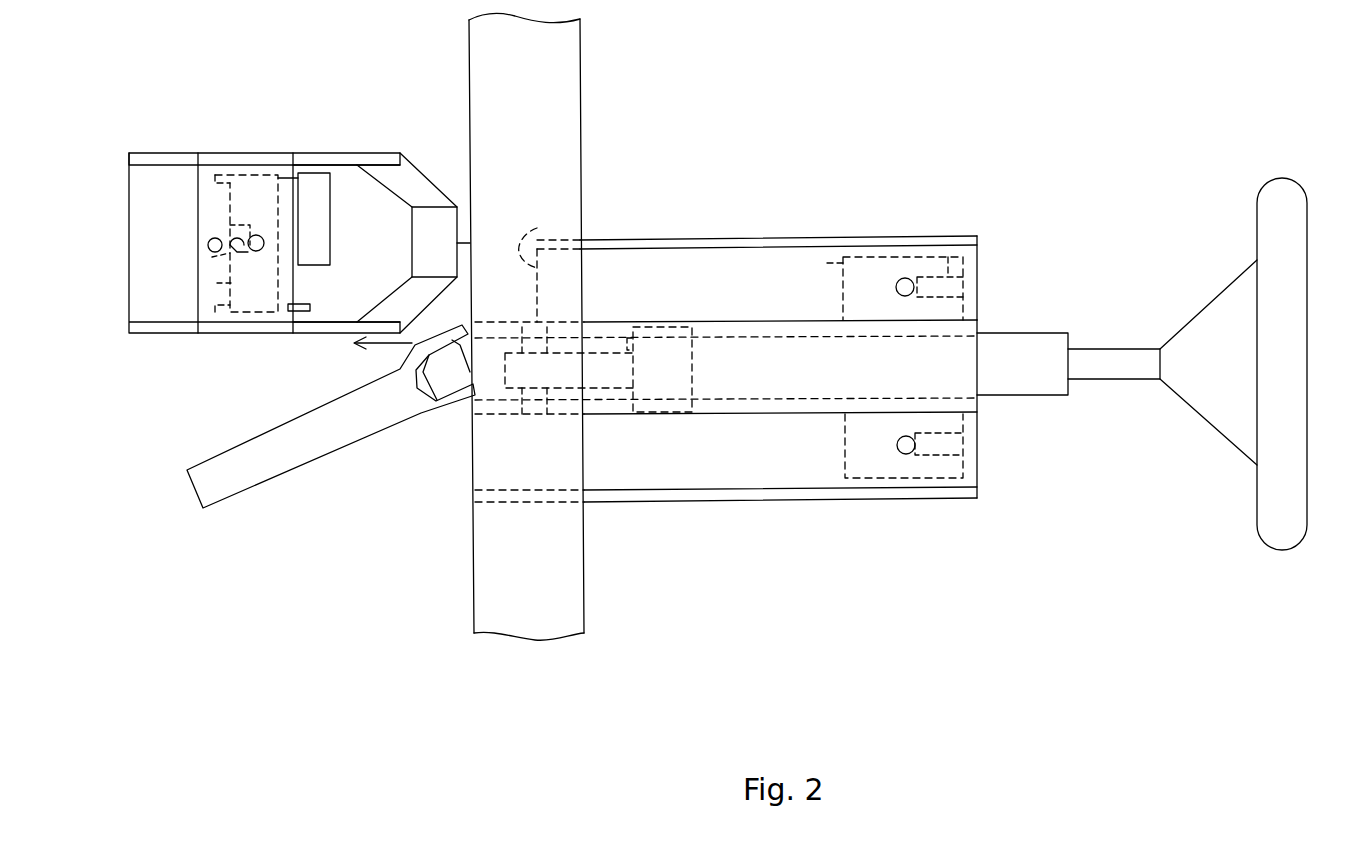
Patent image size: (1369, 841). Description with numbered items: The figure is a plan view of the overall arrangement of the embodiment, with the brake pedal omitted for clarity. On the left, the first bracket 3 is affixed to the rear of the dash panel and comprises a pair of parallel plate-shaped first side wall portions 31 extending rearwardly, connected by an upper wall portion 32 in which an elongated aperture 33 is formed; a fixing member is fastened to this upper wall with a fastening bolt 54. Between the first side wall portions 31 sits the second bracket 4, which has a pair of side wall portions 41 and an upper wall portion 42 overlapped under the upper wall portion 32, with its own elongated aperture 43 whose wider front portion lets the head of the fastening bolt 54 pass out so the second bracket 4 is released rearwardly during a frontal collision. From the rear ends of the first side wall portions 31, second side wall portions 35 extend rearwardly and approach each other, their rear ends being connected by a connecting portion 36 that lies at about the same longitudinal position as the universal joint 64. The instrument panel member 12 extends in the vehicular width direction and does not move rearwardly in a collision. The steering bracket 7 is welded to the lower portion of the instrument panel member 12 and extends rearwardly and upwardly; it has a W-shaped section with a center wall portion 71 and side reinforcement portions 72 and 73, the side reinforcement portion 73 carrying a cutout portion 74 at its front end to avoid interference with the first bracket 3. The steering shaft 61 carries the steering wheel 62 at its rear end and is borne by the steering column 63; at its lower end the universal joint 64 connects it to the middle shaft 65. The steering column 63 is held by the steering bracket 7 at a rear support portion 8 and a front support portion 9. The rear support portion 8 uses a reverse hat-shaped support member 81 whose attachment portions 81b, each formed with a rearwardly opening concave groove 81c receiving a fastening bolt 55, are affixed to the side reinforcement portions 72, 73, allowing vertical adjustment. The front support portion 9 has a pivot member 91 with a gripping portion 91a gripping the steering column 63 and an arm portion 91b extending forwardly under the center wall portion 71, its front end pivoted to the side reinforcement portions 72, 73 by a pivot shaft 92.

The first bracket 3 is at (292, 221).
The second bracket 4 is at (253, 173).
The steering bracket 7 is at (783, 237).
The rear support portion 8 is at (1000, 316).
The front support portion 9 is at (650, 370).
The instrument panel member 12 is at (473, 590).
The first side wall portions 31 is at (307, 152).
The upper wall portion 32 is at (208, 243).
The elongated aperture 33 is at (236, 240).
The second side wall portions 35 is at (383, 190).
The connecting portion 36 is at (472, 243).
The side wall portions 41 is at (222, 173).
The upper wall portion 42 is at (217, 283).
The elongated aperture 43 is at (212, 257).
The fastening bolt 54 is at (256, 251).
The fastening bolt 55 is at (896, 287).
The steering shaft 61 is at (1106, 349).
The steering wheel 62 is at (1302, 182).
The steering column 63 is at (1045, 396).
The universal joint 64 is at (433, 415).
The middle shaft 65 is at (331, 446).
The center wall portion 71 is at (760, 416).
The side reinforcement portion 72 is at (980, 478).
The side reinforcement portion 73 is at (977, 253).
The cutout portion 74 is at (523, 240).
The support member 81 is at (876, 480).
The attachment portions 81b is at (843, 265).
The concave groove 81c is at (948, 257).
The pivot member 91 is at (696, 372).
The gripping portion 91a is at (657, 392).
The arm portion 91b is at (600, 392).
The pivot shaft 92 is at (525, 407).